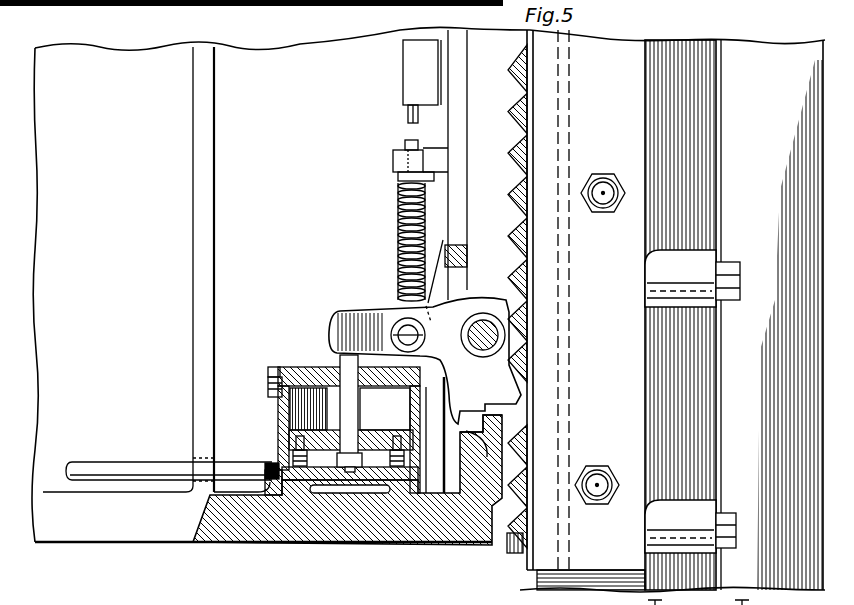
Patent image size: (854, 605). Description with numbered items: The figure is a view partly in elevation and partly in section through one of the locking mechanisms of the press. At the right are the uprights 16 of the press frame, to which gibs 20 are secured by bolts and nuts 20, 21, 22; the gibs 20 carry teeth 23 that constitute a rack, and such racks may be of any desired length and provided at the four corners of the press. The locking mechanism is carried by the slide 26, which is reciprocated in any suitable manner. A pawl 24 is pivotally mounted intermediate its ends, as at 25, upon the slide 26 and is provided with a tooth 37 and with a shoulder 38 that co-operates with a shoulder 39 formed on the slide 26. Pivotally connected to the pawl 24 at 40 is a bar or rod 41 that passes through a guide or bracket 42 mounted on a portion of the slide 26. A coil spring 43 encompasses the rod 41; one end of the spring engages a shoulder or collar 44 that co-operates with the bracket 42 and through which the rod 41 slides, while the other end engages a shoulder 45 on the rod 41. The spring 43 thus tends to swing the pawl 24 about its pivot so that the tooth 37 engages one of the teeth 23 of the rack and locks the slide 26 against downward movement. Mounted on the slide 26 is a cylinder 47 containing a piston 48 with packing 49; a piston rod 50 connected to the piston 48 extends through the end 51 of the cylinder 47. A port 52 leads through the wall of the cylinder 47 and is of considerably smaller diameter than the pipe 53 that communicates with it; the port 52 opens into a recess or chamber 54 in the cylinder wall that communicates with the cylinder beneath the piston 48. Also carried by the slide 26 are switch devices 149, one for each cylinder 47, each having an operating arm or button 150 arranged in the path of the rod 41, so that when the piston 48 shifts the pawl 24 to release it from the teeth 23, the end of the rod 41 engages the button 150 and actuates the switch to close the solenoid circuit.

The uprights 16 is at (795, 52).
The gibs 20 is at (624, 390).
The bolts and nuts 21 is at (603, 196).
The nut 22 is at (608, 176).
The teeth 23 is at (530, 112).
The pawl 24 is at (360, 310).
The pivot 25 is at (489, 305).
The slide 26 is at (212, 533).
The tooth 37 is at (425, 332).
The shoulder 38 is at (488, 458).
The shoulder 39 is at (468, 428).
The pivotal connection 40 is at (404, 318).
The bar or rod 41 is at (405, 143).
The guide or bracket 42 is at (393, 157).
The coil spring 43 is at (398, 192).
The shoulder or collar 44 is at (437, 178).
The shoulder 45 is at (447, 246).
The cylinder 47 is at (329, 416).
The piston 48 is at (333, 421).
The packing 49 is at (290, 444).
The piston rod 50 is at (358, 422).
The end of the cylinder 51 is at (311, 368).
The port 52 is at (293, 481).
The pipe 53 is at (160, 467).
The recess or chamber 54 is at (297, 483).
The switch devices 149 is at (404, 72).
The operating arm or button 150 is at (408, 117).